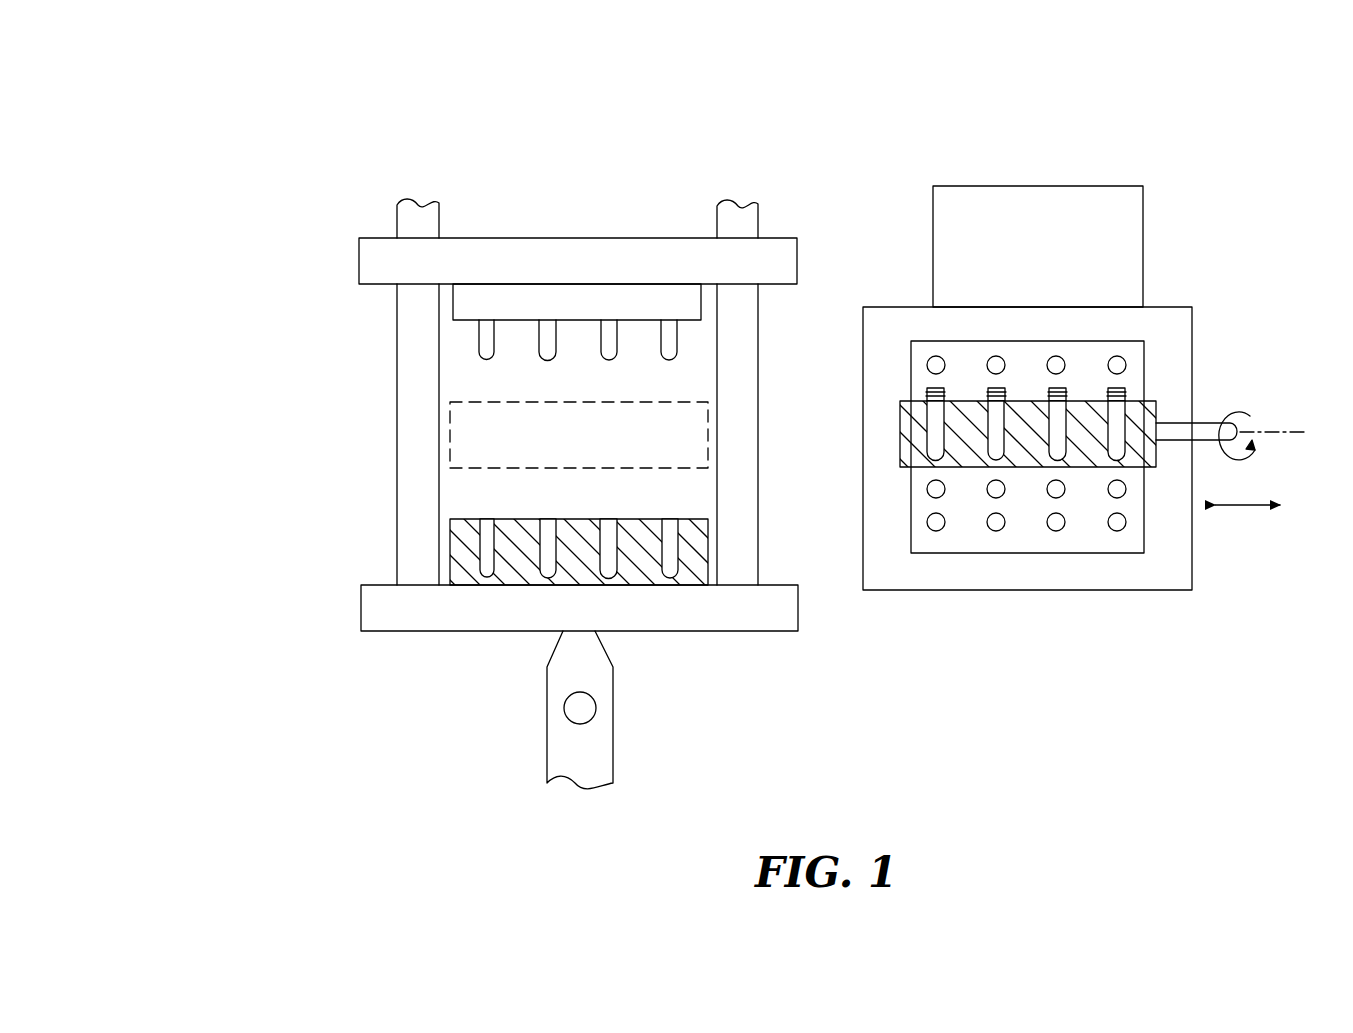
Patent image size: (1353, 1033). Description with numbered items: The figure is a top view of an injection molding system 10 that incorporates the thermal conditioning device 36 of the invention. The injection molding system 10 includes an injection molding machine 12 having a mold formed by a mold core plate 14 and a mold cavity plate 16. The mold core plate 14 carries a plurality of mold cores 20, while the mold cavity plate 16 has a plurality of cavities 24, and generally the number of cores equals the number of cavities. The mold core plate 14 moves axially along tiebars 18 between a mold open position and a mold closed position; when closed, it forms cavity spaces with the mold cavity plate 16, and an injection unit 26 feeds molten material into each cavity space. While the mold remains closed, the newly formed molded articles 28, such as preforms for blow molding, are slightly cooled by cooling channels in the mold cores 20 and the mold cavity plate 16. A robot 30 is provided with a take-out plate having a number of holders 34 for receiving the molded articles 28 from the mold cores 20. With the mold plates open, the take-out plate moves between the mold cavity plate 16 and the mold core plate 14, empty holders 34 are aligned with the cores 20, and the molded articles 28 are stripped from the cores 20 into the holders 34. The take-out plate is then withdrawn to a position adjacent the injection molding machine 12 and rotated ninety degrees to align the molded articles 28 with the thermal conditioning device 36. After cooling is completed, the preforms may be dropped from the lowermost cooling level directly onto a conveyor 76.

The injection molding system 10 is at (803, 100).
The injection molding machine 12 is at (529, 483).
The mold core plate 14 is at (506, 305).
The mold cavity plate 16 is at (596, 589).
The tiebars 18 is at (727, 222).
The mold cores 20 is at (483, 350).
The cavities 24 is at (613, 573).
The injection unit 26 is at (613, 748).
The molded articles 28 is at (1113, 392).
The robot 30 is at (1212, 424).
The holders 34 is at (1039, 408).
The thermal conditioning device 36 is at (1075, 360).
The conveyor 76 is at (970, 195).